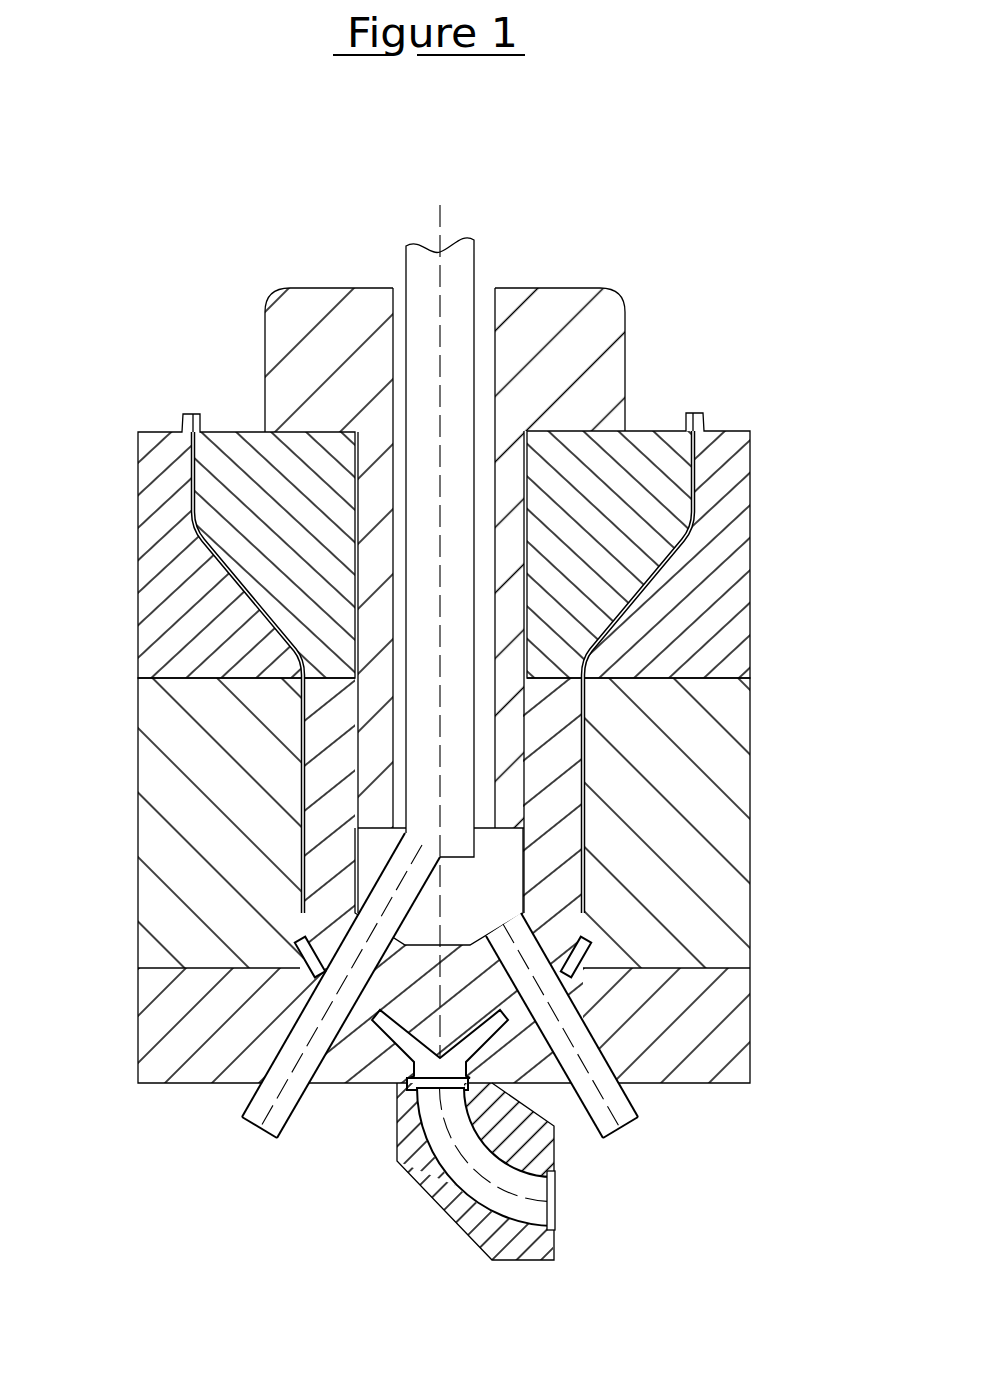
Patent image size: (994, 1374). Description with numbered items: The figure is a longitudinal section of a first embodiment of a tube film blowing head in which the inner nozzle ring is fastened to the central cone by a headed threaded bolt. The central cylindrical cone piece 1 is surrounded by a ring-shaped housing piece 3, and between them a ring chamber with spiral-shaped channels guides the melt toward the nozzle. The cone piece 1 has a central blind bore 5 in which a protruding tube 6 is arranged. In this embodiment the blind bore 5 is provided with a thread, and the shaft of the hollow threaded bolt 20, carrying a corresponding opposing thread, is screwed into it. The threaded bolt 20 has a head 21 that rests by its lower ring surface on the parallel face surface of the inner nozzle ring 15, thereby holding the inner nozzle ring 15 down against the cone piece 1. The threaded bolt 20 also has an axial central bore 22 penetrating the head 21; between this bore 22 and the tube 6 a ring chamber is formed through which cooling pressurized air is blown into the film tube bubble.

The central cylindrical cone piece 1 is at (565, 835).
The ring-shaped housing piece 3 is at (735, 770).
The central blind bore 5 is at (495, 893).
The tube 6 is at (467, 276).
The inner nozzle ring 15 is at (673, 510).
The hollow threaded bolt 20 is at (510, 618).
The head 21 is at (613, 366).
The axial central bore 22 is at (397, 755).